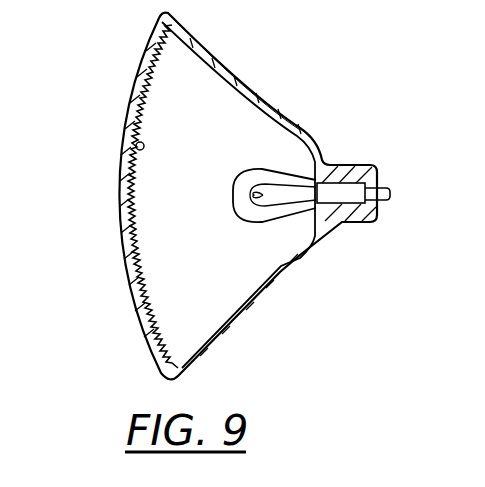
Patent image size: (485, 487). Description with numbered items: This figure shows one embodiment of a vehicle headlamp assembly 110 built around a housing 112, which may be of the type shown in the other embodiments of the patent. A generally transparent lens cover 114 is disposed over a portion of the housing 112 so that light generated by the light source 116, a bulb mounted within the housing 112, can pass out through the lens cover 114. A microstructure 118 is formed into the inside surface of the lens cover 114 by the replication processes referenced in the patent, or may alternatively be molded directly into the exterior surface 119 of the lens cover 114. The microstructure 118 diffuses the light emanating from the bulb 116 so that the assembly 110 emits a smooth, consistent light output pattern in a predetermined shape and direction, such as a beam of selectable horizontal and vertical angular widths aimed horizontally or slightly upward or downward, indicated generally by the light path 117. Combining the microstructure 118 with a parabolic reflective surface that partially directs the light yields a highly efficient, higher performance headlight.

The headlamp assembly 110 is at (304, 104).
The housing 112 is at (240, 72).
The lens cover 114 is at (128, 279).
The light source 116 is at (276, 221).
The light path 117 is at (230, 280).
The microstructure 118 is at (133, 140).
The exterior surface 119 is at (121, 225).